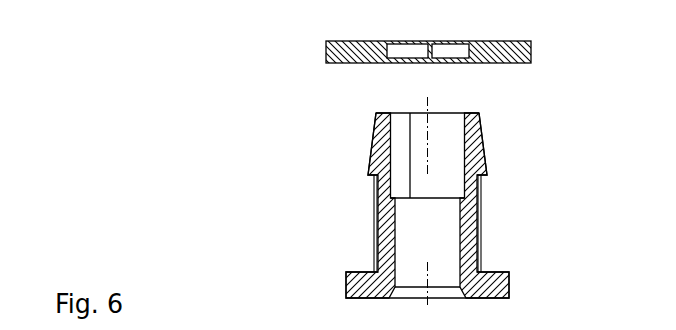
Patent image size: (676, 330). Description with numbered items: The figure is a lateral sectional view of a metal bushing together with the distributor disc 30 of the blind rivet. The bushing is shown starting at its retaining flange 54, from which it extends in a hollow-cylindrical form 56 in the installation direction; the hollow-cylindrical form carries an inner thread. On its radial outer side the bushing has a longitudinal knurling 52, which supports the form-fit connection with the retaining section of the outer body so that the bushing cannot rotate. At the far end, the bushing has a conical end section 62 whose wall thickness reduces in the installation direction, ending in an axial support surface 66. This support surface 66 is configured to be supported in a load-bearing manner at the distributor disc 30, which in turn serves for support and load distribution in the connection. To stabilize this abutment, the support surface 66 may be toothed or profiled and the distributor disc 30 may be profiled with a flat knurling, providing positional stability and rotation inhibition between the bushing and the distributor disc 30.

The distributor disc 30 is at (531, 52).
The longitudinal knurling 52 is at (481, 209).
The retaining flange 54 is at (509, 289).
The hollow-cylindrical form 56 is at (481, 248).
The conical end section 62 is at (487, 162).
The axial support surface 66 is at (479, 113).